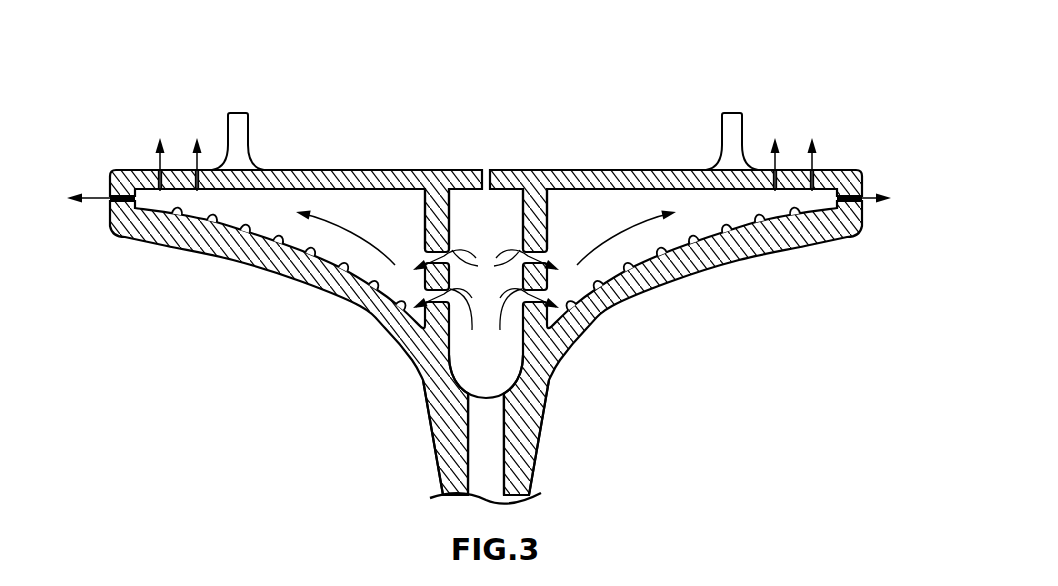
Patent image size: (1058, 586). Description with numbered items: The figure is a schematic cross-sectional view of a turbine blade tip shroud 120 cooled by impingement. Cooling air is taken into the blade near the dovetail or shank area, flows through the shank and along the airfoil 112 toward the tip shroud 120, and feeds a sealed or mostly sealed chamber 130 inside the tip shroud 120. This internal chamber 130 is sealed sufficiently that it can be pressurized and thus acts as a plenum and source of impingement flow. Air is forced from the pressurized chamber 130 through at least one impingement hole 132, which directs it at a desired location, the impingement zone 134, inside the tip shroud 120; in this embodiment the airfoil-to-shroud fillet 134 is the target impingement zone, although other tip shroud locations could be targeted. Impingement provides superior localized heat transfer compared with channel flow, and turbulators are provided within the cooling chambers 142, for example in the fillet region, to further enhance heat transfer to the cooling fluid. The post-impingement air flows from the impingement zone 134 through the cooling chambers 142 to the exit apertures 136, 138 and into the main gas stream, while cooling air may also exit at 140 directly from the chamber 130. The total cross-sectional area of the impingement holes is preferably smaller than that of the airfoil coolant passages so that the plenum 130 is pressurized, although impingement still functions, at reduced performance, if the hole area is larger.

The tip shroud 120 is at (777, 100).
The airfoil 112 is at (520, 468).
The chamber 130 is at (521, 218).
The impingement hole 132 is at (486, 303).
The impingement zone 134 is at (388, 290).
The exit aperture 136 is at (108, 205).
The exit aperture 138 is at (158, 171).
The exit 140 is at (483, 170).
The cooling chamber 142 is at (321, 193).